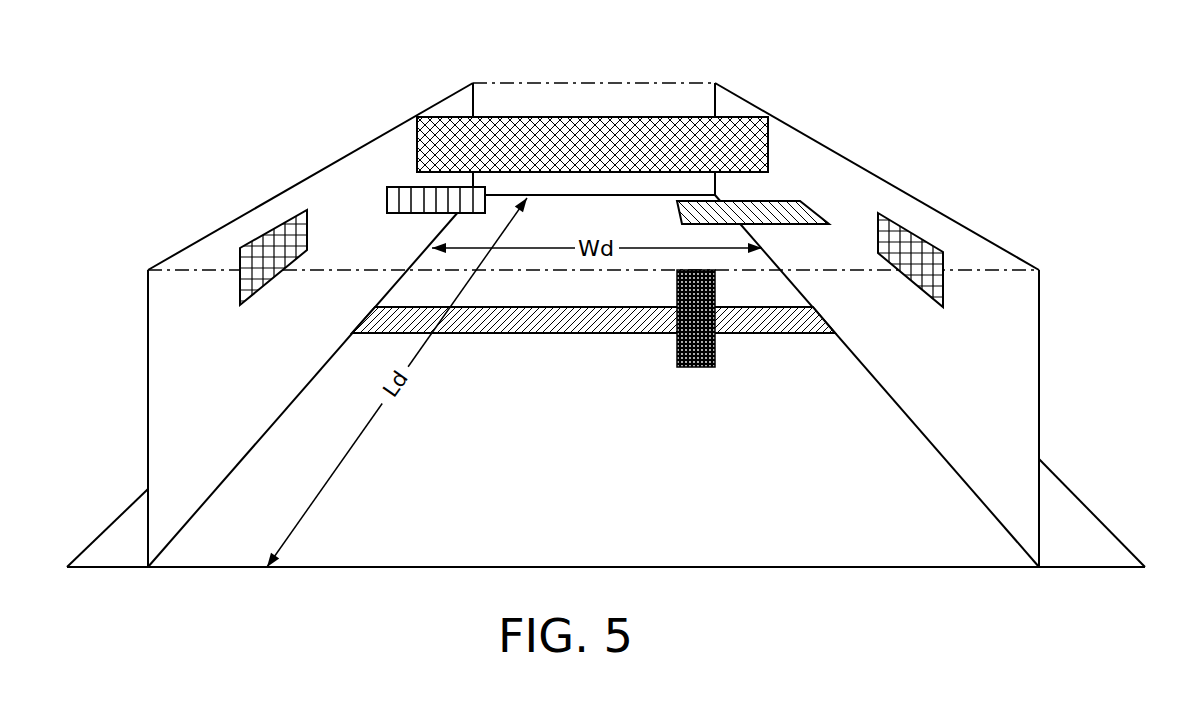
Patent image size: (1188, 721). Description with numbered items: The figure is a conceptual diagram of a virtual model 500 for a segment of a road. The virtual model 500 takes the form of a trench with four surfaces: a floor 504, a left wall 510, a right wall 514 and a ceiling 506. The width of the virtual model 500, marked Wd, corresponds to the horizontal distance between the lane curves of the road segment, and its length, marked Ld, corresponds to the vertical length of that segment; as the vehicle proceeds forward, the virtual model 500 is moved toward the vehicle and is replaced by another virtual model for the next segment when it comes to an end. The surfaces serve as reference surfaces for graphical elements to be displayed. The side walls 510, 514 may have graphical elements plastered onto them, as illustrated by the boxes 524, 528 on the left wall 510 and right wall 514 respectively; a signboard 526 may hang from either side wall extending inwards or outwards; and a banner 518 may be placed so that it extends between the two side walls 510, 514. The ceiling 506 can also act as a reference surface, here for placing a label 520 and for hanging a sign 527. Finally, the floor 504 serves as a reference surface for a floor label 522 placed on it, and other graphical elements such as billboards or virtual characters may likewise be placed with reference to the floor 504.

The virtual model 500 is at (696, 40).
The floor 504 is at (589, 483).
The ceiling 506 is at (503, 87).
The left wall 510 is at (224, 371).
The right wall 514 is at (1016, 386).
The banner 518 is at (611, 154).
The label 520 is at (815, 210).
The floor label 522 is at (626, 334).
The box 524 is at (309, 226).
The signboard 526 is at (407, 186).
The sign 527 is at (714, 366).
The box 528 is at (915, 233).